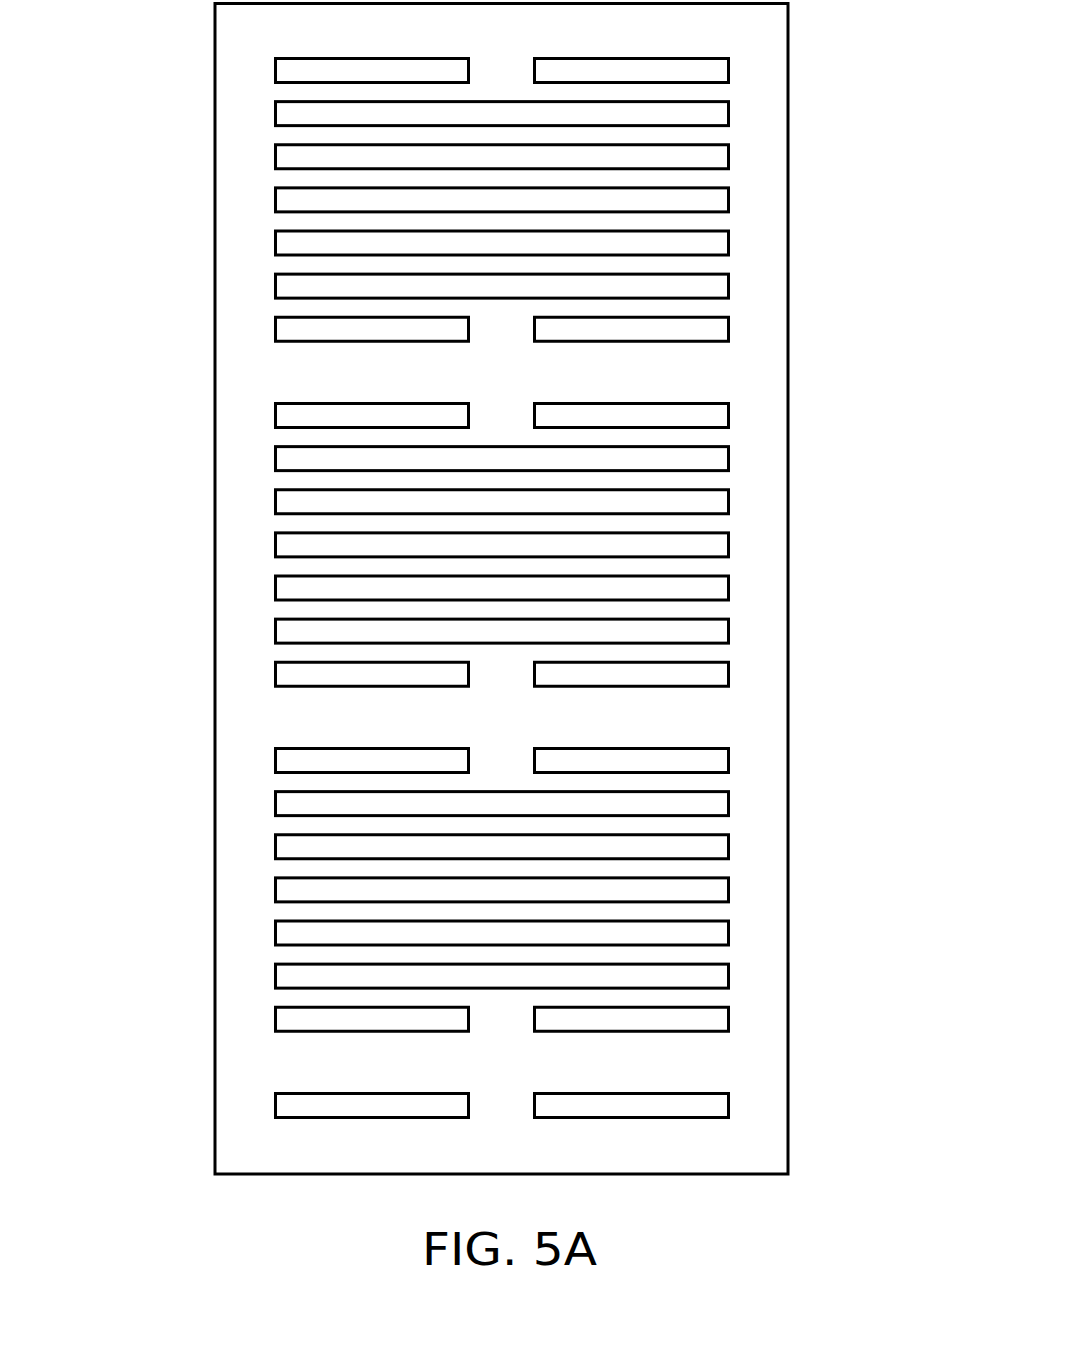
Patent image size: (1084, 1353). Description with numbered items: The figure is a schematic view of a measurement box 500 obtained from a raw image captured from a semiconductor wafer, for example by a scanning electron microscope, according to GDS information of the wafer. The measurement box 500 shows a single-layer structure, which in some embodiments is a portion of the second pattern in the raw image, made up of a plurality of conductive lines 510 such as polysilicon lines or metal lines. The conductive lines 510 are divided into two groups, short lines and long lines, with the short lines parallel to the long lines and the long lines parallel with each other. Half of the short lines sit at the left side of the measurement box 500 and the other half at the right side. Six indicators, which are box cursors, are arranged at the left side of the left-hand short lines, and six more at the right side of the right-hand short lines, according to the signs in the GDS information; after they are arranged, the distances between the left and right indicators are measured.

The measurement box 500 is at (868, 1234).
The conductive lines 510 is at (746, 1161).